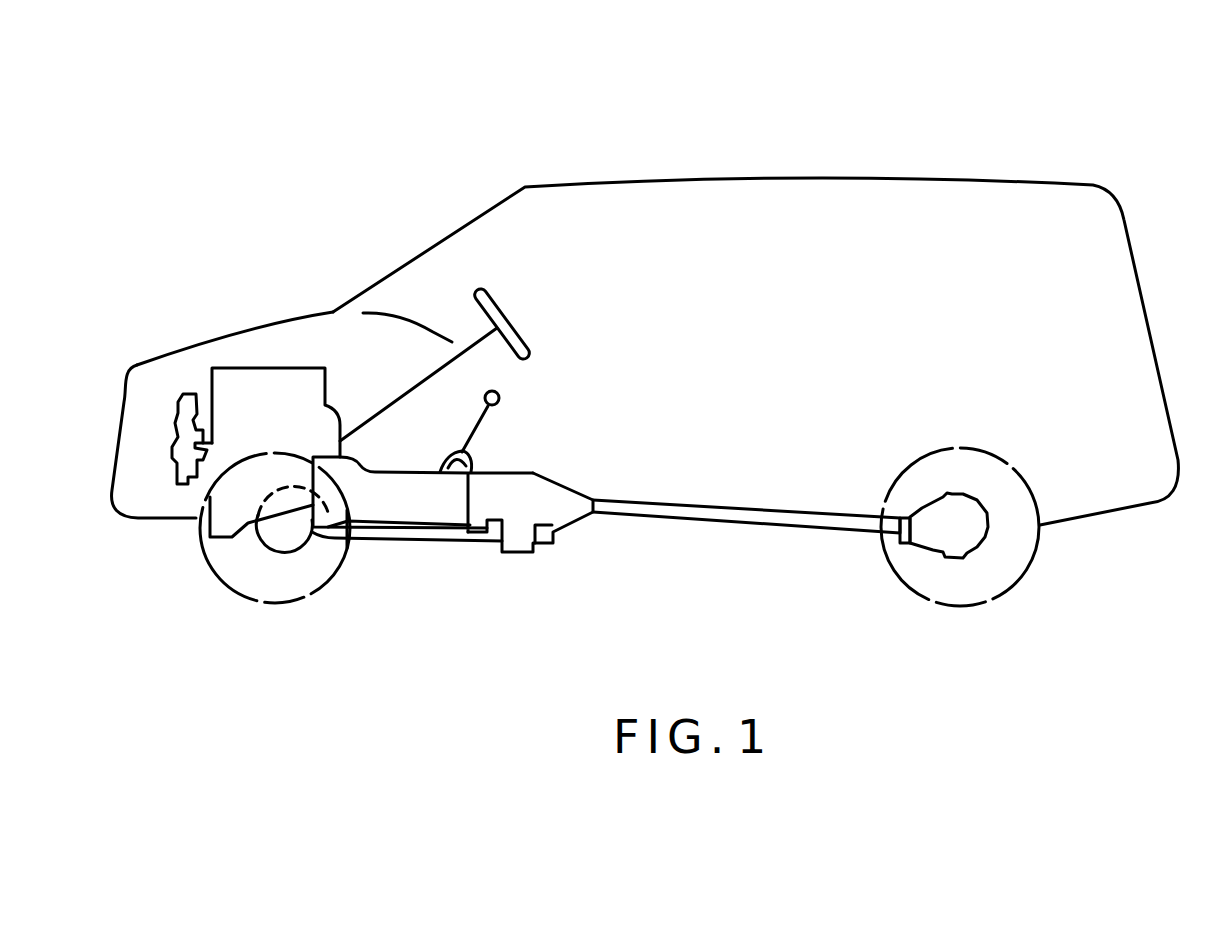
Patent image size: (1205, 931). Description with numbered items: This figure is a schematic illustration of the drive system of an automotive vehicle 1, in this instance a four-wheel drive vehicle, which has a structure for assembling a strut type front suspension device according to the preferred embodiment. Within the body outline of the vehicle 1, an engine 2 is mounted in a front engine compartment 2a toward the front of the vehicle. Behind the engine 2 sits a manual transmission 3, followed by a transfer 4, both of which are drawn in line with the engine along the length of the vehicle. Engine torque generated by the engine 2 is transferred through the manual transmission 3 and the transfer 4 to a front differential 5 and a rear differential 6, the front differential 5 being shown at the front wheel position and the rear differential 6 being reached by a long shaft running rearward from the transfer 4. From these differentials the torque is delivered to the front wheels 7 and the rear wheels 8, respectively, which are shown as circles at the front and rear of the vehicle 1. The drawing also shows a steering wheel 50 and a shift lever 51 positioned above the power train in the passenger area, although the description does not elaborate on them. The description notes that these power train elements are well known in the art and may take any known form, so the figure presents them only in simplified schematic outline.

The automotive vehicle 1 is at (934, 124).
The engine 2 is at (257, 368).
The front engine compartment 2a is at (312, 332).
The manual transmission 3 is at (395, 512).
The transfer 4 is at (567, 491).
The front differential 5 is at (283, 553).
The rear differential 6 is at (925, 550).
The front wheels 7 is at (215, 598).
The rear wheels 8 is at (1022, 568).
The steering wheel 50 is at (523, 338).
The shift lever 51 is at (433, 445).